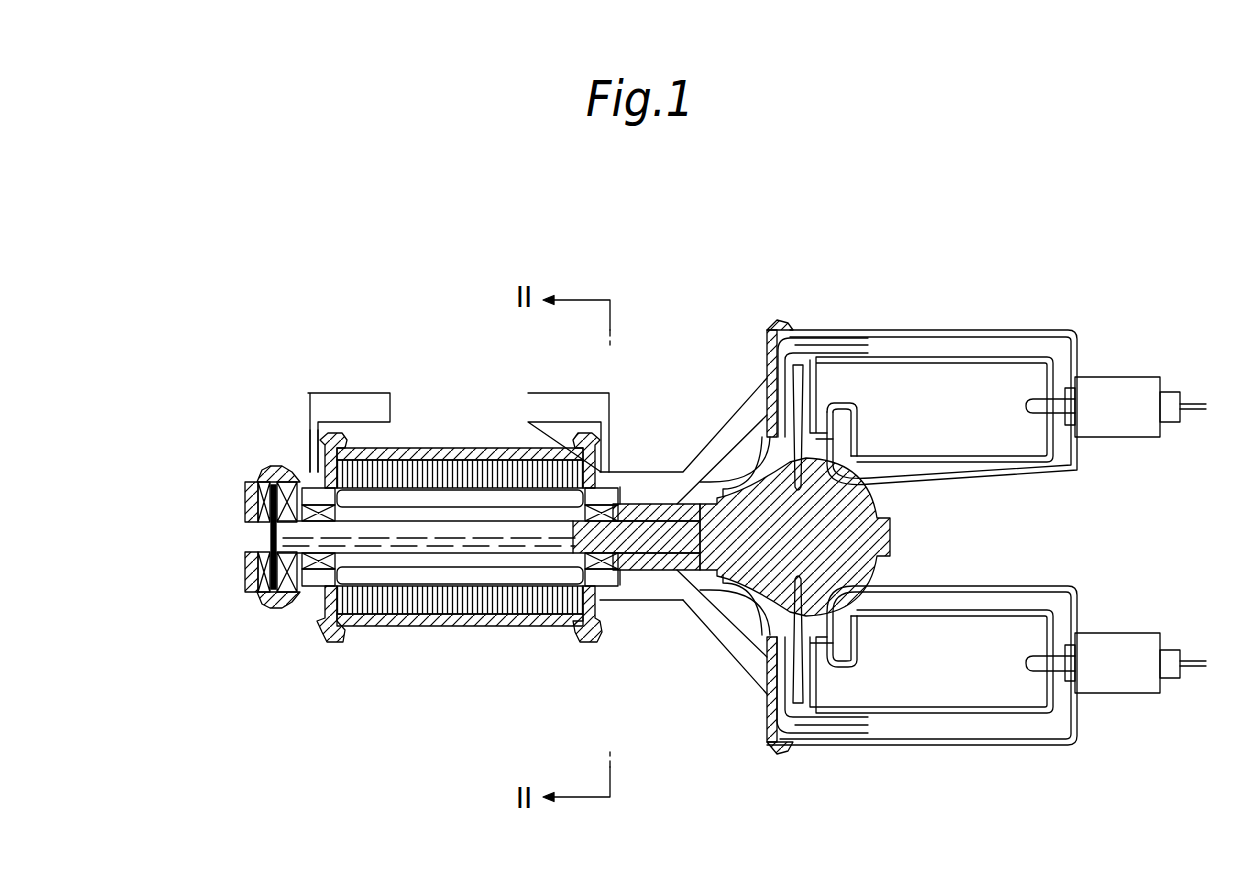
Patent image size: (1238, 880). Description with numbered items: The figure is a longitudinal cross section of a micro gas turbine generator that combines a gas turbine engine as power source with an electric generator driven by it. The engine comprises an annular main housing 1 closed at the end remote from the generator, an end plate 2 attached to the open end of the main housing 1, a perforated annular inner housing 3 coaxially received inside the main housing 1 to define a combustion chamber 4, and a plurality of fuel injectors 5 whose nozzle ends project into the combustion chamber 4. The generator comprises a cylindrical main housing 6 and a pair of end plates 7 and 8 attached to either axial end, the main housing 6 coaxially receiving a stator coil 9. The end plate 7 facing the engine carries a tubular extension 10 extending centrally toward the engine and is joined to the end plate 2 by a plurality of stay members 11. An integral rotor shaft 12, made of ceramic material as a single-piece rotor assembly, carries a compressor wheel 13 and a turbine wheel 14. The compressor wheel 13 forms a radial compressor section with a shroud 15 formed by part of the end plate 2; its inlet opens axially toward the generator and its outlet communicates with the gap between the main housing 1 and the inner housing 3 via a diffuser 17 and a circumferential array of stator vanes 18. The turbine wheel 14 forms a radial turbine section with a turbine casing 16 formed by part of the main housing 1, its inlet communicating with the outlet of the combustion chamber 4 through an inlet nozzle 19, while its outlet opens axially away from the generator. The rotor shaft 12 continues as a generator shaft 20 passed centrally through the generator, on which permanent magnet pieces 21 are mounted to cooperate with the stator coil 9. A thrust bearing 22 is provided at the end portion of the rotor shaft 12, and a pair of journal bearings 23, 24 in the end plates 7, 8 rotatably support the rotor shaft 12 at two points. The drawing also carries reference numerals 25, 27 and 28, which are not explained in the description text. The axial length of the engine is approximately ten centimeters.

The main housing 1 is at (1048, 330).
The end plate 2 is at (770, 325).
The inner housing 3 is at (990, 356).
The combustion chamber 4 is at (916, 424).
The fuel injector 5 is at (1133, 386).
The main housing 6 is at (455, 626).
The end plate 7 is at (595, 644).
The end plate 8 is at (317, 630).
The stator coil 9 is at (522, 606).
The tubular extension 10 is at (644, 601).
The stay member 11 is at (700, 618).
The integral rotor shaft 12 is at (722, 598).
The compressor wheel 13 is at (748, 628).
The turbine wheel 14 is at (883, 578).
The shroud 15 is at (745, 471).
The turbine casing 16 is at (892, 458).
The diffuser 17 is at (766, 716).
The stator vane 18 is at (848, 734).
The inlet nozzle 19 is at (818, 410).
The generator shaft 20 is at (378, 548).
The permanent magnet piece 21 is at (445, 503).
The thrust bearing 22 is at (250, 607).
The journal bearing 23 is at (618, 460).
The journal bearing 24 is at (297, 450).
The bearing 25 is at (318, 563).
The bearing holder 27 is at (312, 497).
The mounting bracket 28 is at (361, 400).